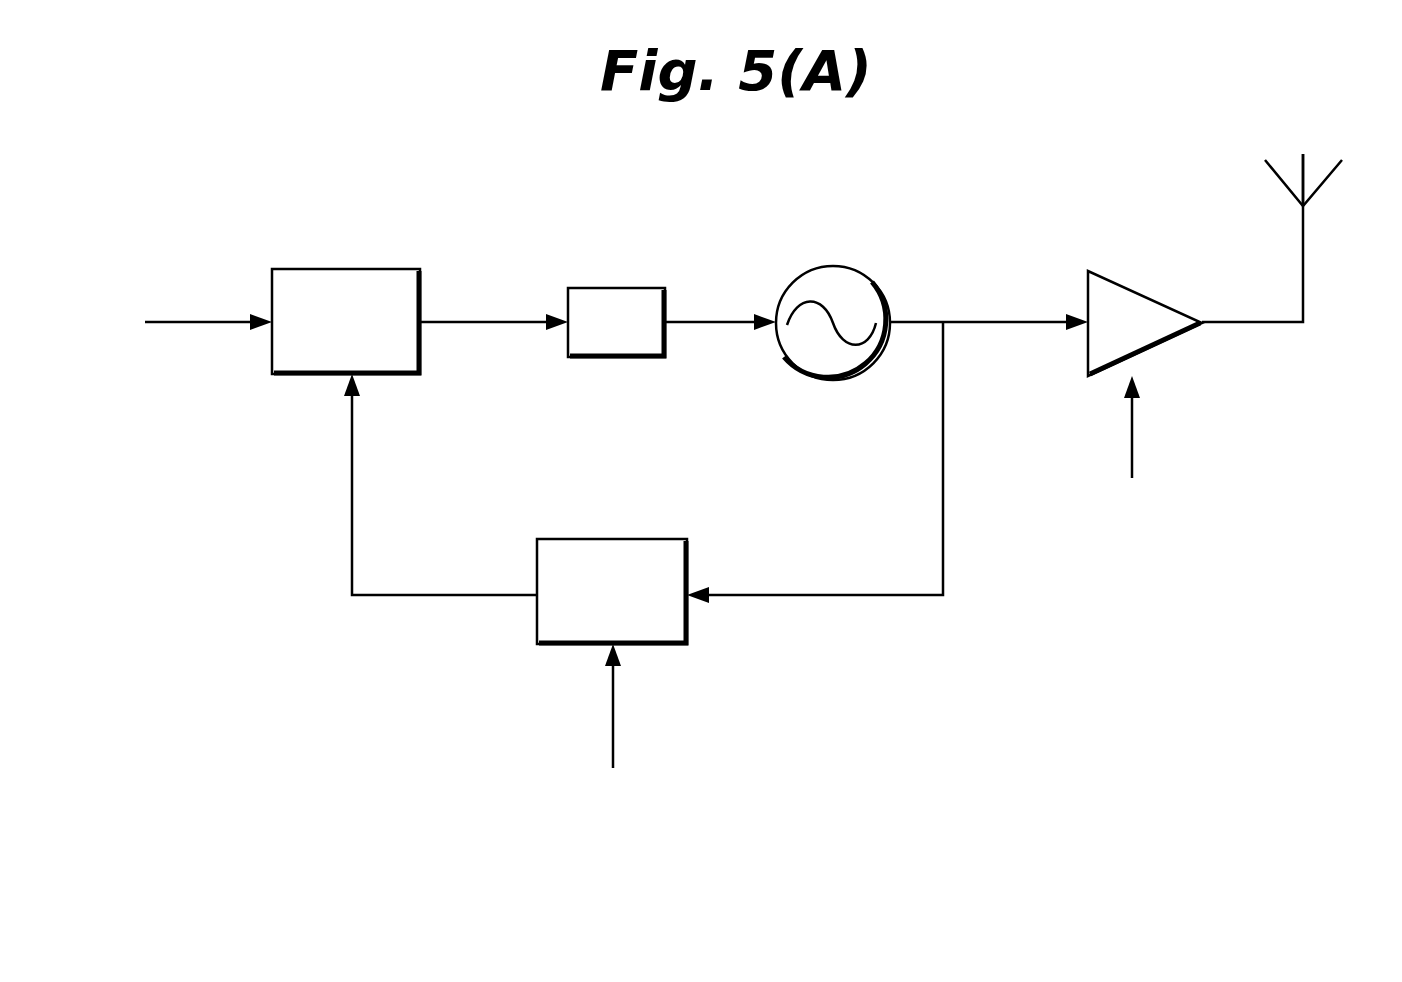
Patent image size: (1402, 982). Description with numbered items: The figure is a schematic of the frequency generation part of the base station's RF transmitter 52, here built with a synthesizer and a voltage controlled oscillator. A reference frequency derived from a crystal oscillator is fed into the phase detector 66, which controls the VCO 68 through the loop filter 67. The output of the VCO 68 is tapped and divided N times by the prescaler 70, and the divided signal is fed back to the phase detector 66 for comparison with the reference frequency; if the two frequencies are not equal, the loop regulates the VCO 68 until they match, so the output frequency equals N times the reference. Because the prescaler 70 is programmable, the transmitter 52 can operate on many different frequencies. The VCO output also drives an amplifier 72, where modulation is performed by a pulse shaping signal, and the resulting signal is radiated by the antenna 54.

The RF transmitter 52 is at (1048, 626).
The antenna 54 is at (1329, 171).
The phase detector 66 is at (340, 268).
The loop filter 67 is at (607, 288).
The voltage controlled oscillator 68 is at (826, 266).
The prescaler 70 is at (605, 538).
The amplifier 72 is at (1123, 287).